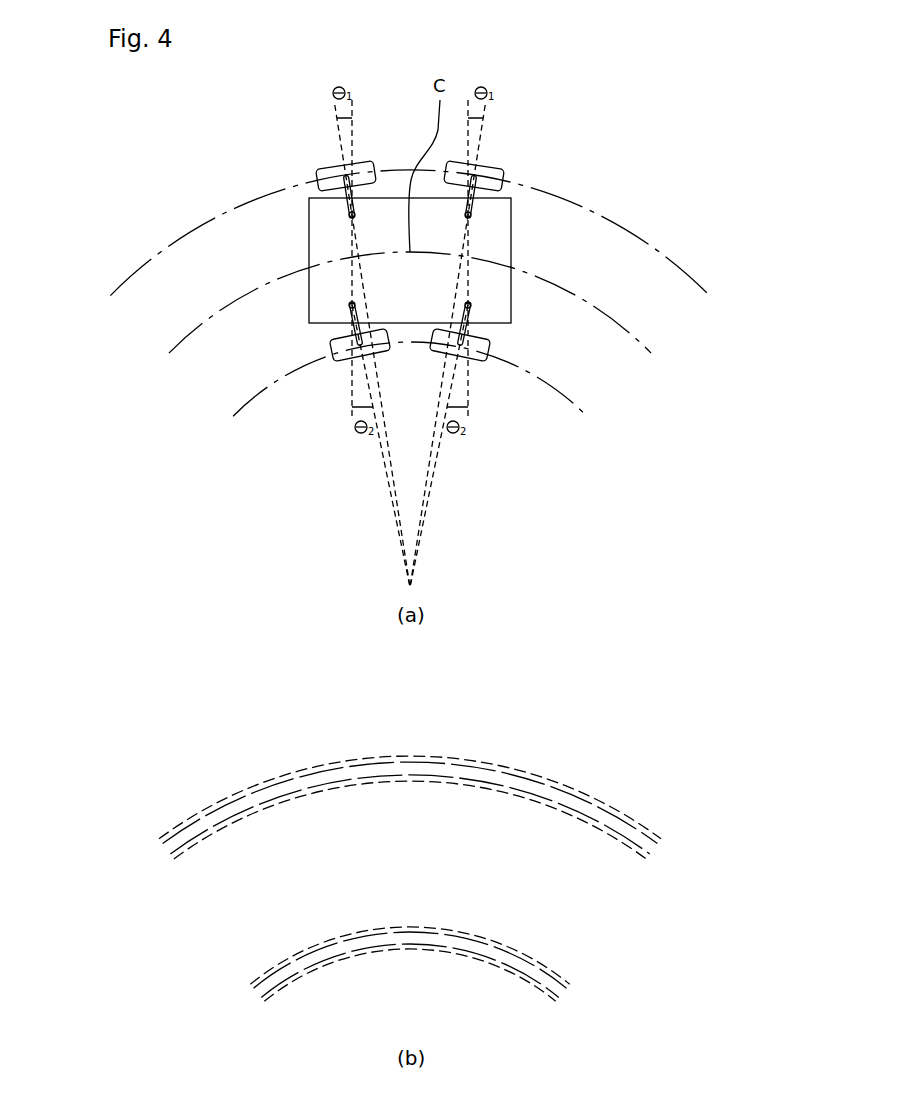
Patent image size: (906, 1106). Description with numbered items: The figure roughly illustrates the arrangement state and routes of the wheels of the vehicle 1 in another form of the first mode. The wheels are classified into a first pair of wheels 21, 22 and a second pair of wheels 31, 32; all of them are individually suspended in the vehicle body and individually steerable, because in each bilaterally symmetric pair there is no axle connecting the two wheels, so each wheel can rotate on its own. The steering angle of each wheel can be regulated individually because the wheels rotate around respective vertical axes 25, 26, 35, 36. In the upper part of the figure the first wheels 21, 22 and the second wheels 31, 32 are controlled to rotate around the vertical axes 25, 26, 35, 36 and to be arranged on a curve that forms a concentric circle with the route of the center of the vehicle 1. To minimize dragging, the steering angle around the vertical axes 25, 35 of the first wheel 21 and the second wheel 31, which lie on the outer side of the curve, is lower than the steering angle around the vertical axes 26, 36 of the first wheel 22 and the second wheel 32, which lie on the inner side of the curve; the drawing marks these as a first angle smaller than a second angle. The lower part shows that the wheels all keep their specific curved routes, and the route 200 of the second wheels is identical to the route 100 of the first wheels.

The vehicle 1 is at (275, 136).
The first wheel 21 is at (493, 172).
The first wheel 22 is at (477, 360).
The vertical axis 25 is at (468, 215).
The vertical axis 26 is at (468, 305).
The second wheel 31 is at (362, 170).
The second wheel 32 is at (343, 360).
The vertical axis 35 is at (352, 215).
The vertical axis 36 is at (352, 305).
The route of the first wheels 100 is at (478, 782).
The route of the second wheels 200 is at (290, 773).